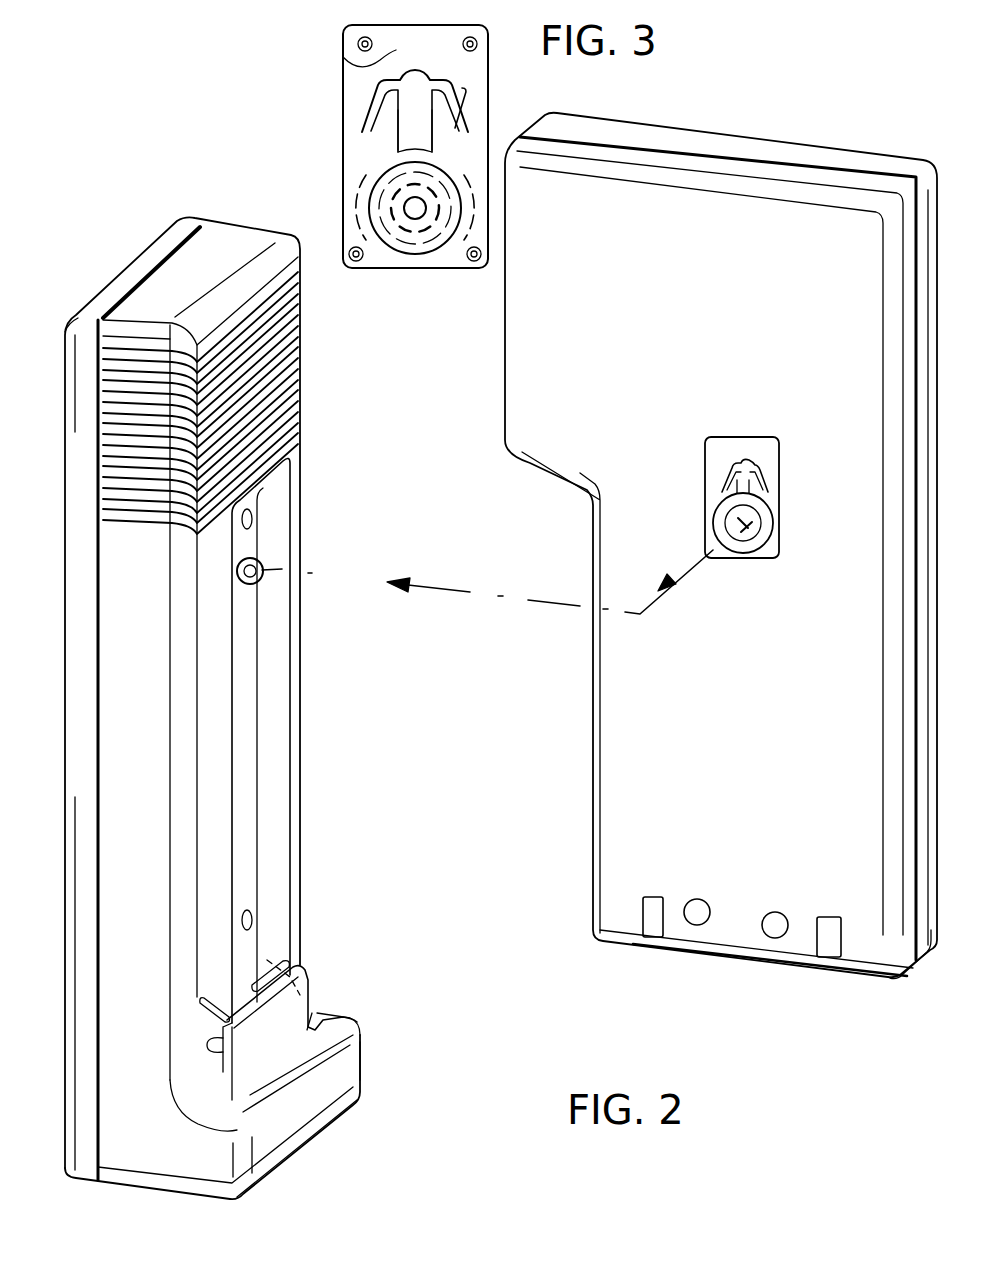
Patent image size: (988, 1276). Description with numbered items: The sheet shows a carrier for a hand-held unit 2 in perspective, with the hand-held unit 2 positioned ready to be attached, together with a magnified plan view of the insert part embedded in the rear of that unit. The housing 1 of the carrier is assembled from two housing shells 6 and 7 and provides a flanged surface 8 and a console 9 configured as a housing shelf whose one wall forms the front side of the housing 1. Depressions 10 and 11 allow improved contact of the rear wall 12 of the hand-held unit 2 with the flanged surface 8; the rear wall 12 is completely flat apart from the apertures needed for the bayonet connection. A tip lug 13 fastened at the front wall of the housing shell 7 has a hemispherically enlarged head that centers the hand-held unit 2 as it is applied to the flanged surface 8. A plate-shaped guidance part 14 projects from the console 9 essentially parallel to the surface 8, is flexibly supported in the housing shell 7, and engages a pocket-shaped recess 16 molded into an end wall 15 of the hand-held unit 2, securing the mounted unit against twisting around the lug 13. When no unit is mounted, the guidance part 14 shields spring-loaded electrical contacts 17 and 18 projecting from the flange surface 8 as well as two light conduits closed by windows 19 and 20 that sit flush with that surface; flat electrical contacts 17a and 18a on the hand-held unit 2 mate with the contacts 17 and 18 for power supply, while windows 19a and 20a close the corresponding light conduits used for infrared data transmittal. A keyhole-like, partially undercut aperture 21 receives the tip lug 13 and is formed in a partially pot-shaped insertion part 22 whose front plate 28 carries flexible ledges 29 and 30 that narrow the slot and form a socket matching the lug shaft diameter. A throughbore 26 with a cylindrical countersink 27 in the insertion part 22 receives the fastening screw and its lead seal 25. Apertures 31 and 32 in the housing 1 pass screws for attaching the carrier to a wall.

In FIG. 2, the housing 1 is at (329, 833).
In FIG. 2, the hand-held unit 2 is at (721, 545).
In FIG. 2, the housing shell 6 is at (112, 289).
In FIG. 2, the housing shell 7 is at (168, 278).
In FIG. 2, the flanged surface 8 is at (250, 665).
In FIG. 2, the console 9 is at (303, 1110).
In FIG. 2, the depression 10 is at (274, 725).
In FIG. 2, the depression 11 is at (208, 750).
In FIG. 2, the rear wall 12 is at (791, 747).
In FIG. 2, the tip lug 13 is at (265, 578).
In FIG. 2, the guidance part 14 is at (270, 1014).
In FIG. 2, the end wall 15 is at (852, 975).
In FIG. 2, the pocket-shaped recess 16 is at (745, 958).
In FIG. 2, the spring-loaded electrical contact 17 is at (304, 990).
In FIG. 2, the spring-loaded electrical contact 18 is at (212, 1047).
In FIG. 2, the window 19 is at (223, 1002).
In FIG. 2, the window 20 is at (264, 968).
In FIG. 3, the keyhole-like aperture 21 is at (400, 137).
In FIG. 2, the keyhole-like aperture 21 is at (768, 504).
In FIG. 3, the insertion part 22 is at (319, 183).
In FIG. 2, the insertion part 22 is at (748, 450).
In FIG. 2, the lead seal 25 is at (752, 560).
In FIG. 3, the throughbore 26 is at (428, 216).
In FIG. 3, the cylindrical countersink 27 is at (390, 253).
In FIG. 3, the front plate 28 is at (393, 53).
In FIG. 3, the flexible ledge 29 is at (443, 107).
In FIG. 3, the flexible ledge 30 is at (392, 107).
In FIG. 2, the aperture 31 is at (253, 518).
In FIG. 2, the aperture 32 is at (242, 920).
In FIG. 2, the flat electrical contact 17a is at (648, 895).
In FIG. 2, the flat electrical contact 18a is at (830, 915).
In FIG. 2, the window 19a is at (775, 912).
In FIG. 2, the window 20a is at (698, 900).